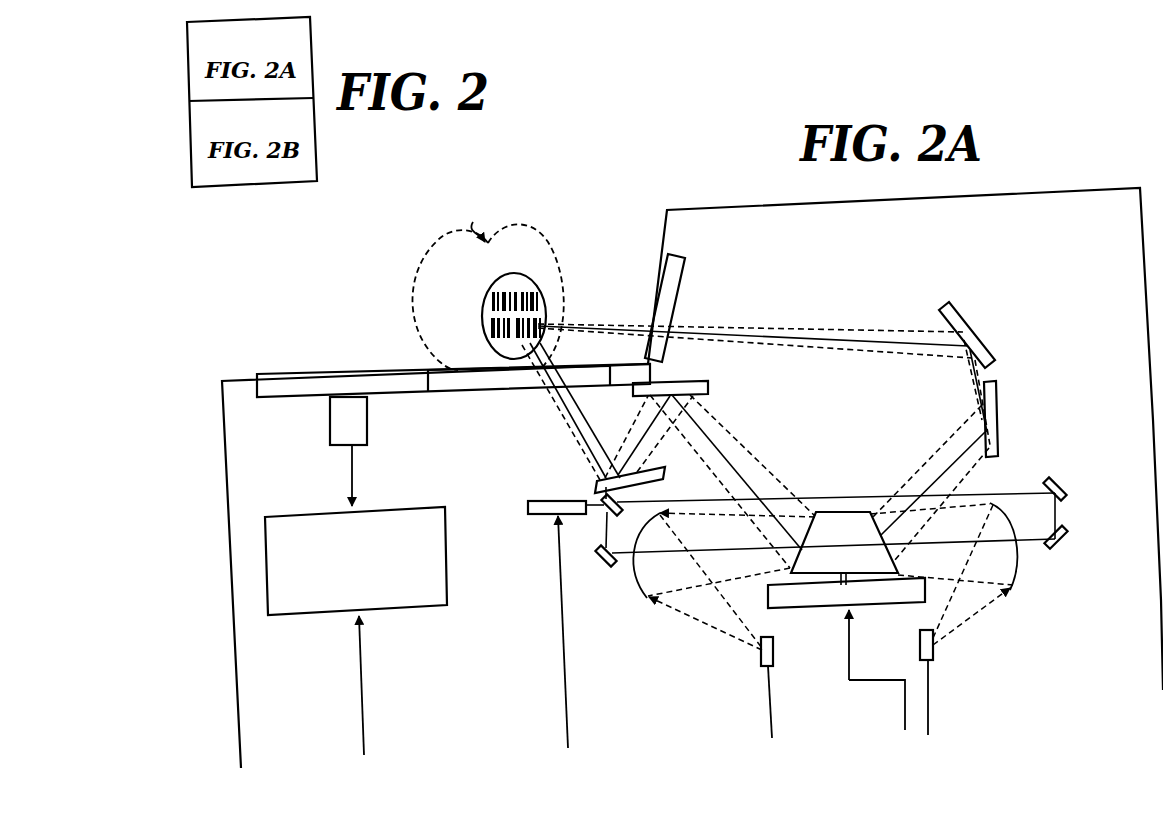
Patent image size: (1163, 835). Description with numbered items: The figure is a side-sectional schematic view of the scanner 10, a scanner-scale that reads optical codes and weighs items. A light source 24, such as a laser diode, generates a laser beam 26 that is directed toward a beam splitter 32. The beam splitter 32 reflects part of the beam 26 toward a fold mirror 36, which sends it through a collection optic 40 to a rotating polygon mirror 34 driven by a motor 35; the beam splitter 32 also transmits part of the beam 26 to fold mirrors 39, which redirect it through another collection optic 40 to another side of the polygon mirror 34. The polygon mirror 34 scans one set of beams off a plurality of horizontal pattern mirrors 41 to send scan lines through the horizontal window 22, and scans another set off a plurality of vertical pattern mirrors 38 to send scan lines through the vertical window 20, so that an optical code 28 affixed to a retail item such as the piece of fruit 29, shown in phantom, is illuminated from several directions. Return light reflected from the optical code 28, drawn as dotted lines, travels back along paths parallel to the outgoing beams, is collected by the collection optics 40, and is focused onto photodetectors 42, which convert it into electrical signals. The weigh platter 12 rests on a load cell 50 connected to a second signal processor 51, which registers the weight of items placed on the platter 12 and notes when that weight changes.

The scanner 10 is at (1082, 190).
The weigh platter 12 is at (298, 375).
The vertical window 20 is at (684, 270).
The horizontal window 22 is at (502, 392).
The light source 24 is at (548, 500).
The laser beam 26 is at (592, 508).
The optical code 28 is at (491, 301).
The piece of fruit 29 is at (548, 233).
The beam splitter 32 is at (624, 497).
The rotating polygon mirror 34 is at (842, 512).
The motor 35 is at (826, 612).
The fold mirror 36 is at (602, 567).
The vertical pattern mirrors 38 is at (966, 322).
The fold mirrors 39 is at (1066, 532).
The collection optic 40 is at (636, 598).
The horizontal pattern mirrors 41 is at (710, 386).
The photodetectors 42 is at (760, 655).
The load cell 50 is at (367, 422).
The second signal processor 51 is at (403, 610).